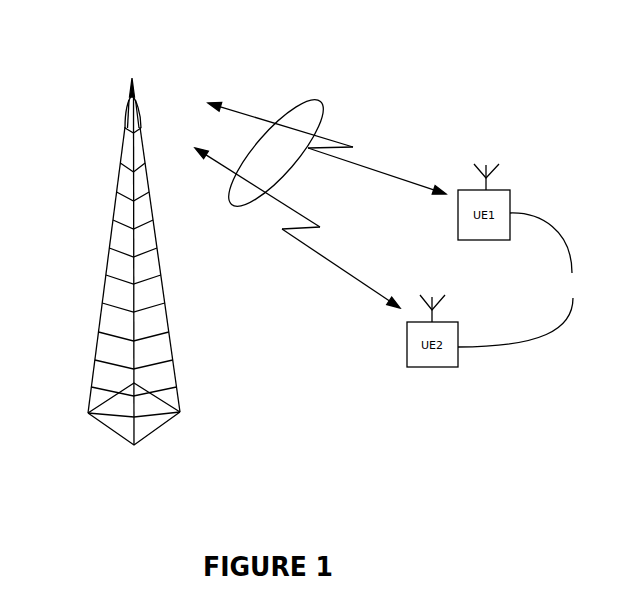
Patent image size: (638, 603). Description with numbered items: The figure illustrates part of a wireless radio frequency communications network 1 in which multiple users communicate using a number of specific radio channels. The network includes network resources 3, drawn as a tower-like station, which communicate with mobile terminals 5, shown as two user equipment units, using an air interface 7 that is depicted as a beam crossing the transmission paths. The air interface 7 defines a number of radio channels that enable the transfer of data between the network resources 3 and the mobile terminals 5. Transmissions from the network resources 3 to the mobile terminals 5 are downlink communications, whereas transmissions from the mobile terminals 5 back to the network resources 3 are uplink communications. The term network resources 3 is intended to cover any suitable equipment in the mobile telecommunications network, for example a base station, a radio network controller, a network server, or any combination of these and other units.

The RF communications network 1 is at (502, 81).
The network resources 3 is at (66, 259).
The mobile terminals 5 is at (517, 280).
The air interface 7 is at (322, 102).